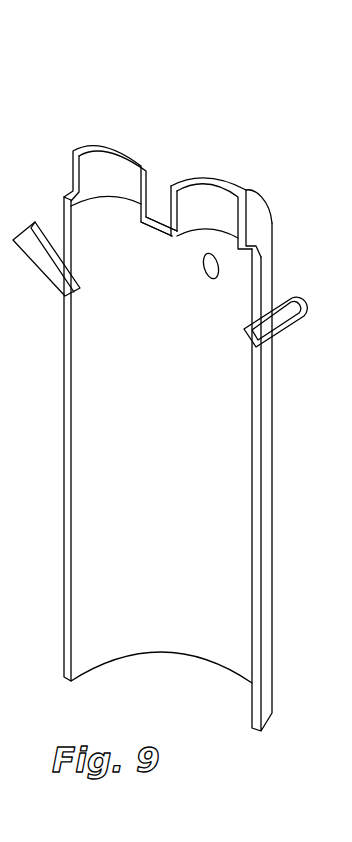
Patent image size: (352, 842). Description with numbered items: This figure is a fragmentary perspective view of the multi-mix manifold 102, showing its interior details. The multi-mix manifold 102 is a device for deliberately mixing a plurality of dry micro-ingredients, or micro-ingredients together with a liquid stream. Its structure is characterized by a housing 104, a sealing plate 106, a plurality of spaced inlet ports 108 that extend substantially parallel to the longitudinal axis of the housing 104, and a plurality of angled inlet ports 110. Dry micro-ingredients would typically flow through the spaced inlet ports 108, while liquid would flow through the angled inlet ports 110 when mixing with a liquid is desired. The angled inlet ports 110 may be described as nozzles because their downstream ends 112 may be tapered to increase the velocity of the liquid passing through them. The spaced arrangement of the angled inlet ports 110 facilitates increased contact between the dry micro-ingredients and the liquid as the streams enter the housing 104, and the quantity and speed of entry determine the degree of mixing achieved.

The multi-mix manifold 102 is at (264, 120).
The housing 104 is at (184, 519).
The sealing plate 106 is at (165, 174).
The spaced inlet ports 108 is at (102, 173).
The angled inlet ports 110 is at (32, 242).
The downstream ends 112 is at (77, 293).